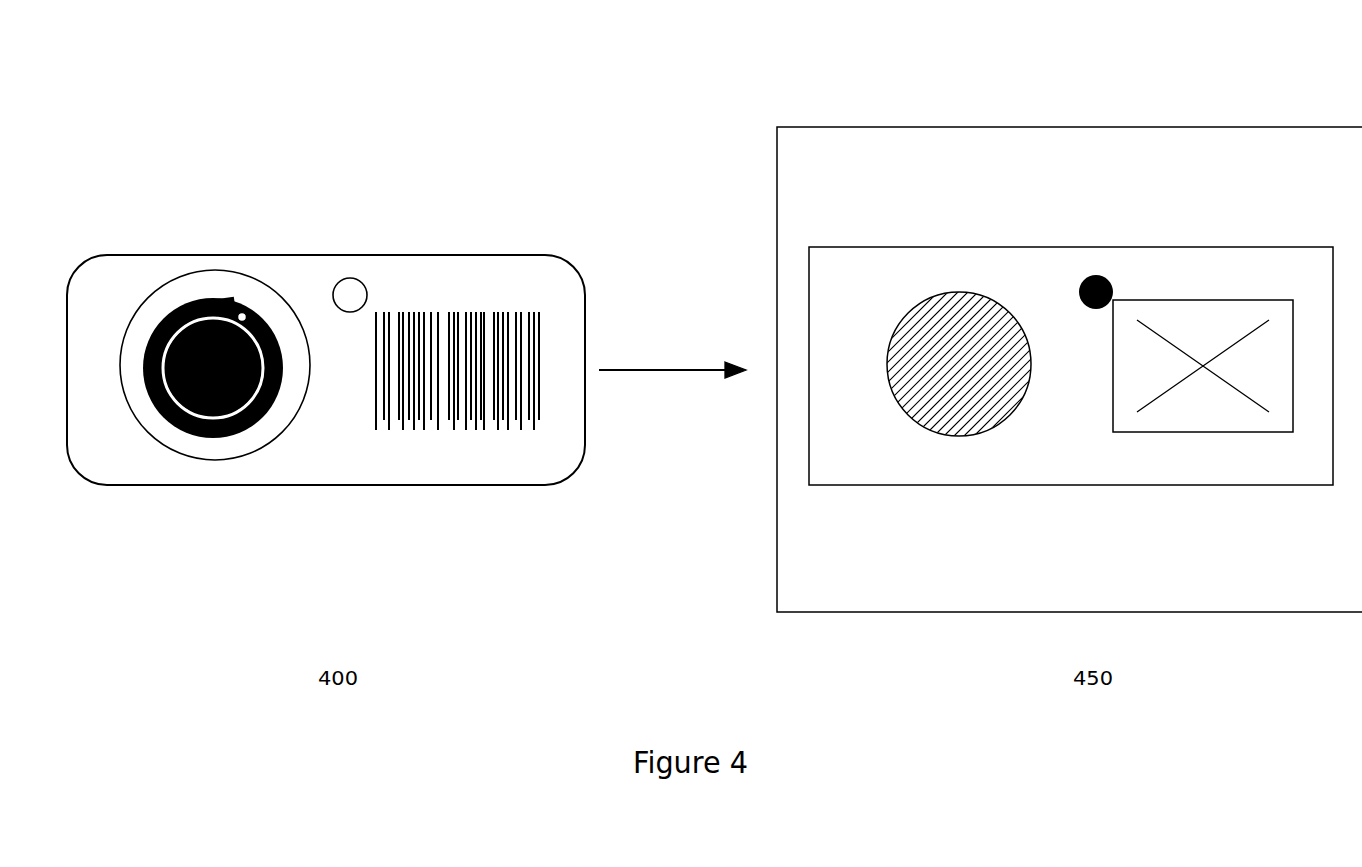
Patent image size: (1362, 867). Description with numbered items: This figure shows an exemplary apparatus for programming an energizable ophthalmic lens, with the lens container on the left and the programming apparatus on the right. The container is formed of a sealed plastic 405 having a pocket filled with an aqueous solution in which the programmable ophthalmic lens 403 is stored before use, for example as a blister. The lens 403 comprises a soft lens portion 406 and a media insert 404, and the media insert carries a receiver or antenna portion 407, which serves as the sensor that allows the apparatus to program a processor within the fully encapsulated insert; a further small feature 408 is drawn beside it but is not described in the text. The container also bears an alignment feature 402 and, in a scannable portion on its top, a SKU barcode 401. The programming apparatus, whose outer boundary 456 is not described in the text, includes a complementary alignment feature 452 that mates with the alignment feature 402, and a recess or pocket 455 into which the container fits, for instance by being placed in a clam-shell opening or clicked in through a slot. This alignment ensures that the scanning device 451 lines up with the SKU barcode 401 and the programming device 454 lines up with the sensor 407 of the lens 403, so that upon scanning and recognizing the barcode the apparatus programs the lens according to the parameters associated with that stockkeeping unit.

The SKU barcode 401 is at (502, 320).
The alignment feature 402 is at (353, 290).
The programmable ophthalmic lens 403 is at (285, 440).
The media insert 404 is at (207, 442).
The sealed plastic 405 is at (460, 465).
The soft lens portion 406 is at (157, 432).
The receiver or antenna portion 407 is at (243, 312).
The sensor window 408 is at (228, 300).
The scanning device 451 is at (1240, 318).
The complementary alignment feature 452 is at (1094, 270).
The programming device 454 is at (917, 310).
The aligning recess 455 is at (1003, 268).
The outer frame 456 is at (855, 173).